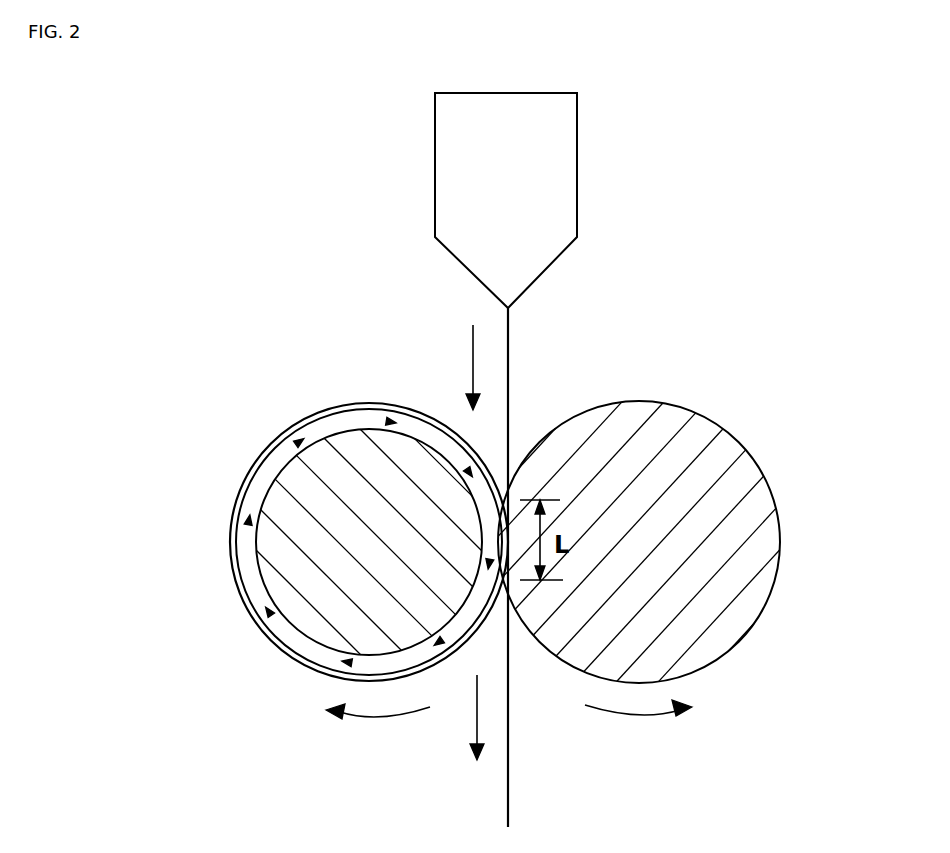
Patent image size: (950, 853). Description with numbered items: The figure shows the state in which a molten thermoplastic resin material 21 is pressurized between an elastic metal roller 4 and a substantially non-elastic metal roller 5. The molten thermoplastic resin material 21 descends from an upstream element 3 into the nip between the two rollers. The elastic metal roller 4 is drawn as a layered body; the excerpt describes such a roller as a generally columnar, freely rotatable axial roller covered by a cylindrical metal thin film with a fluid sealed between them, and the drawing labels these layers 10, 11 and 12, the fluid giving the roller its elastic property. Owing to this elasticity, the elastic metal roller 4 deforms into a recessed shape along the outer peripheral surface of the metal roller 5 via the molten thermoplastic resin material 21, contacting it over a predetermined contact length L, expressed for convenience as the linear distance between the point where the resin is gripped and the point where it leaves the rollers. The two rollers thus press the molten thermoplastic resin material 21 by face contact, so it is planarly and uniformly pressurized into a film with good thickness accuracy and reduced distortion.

The hopper / feeder 3 is at (553, 167).
The molten thermoplastic resin material 21 is at (510, 353).
The metal roller 5 is at (717, 490).
The elastic metal roller 4 is at (277, 542).
The core of elastic roller 10 is at (285, 527).
The elastic layer 11 is at (240, 553).
The outer surface layer 12 is at (253, 593).